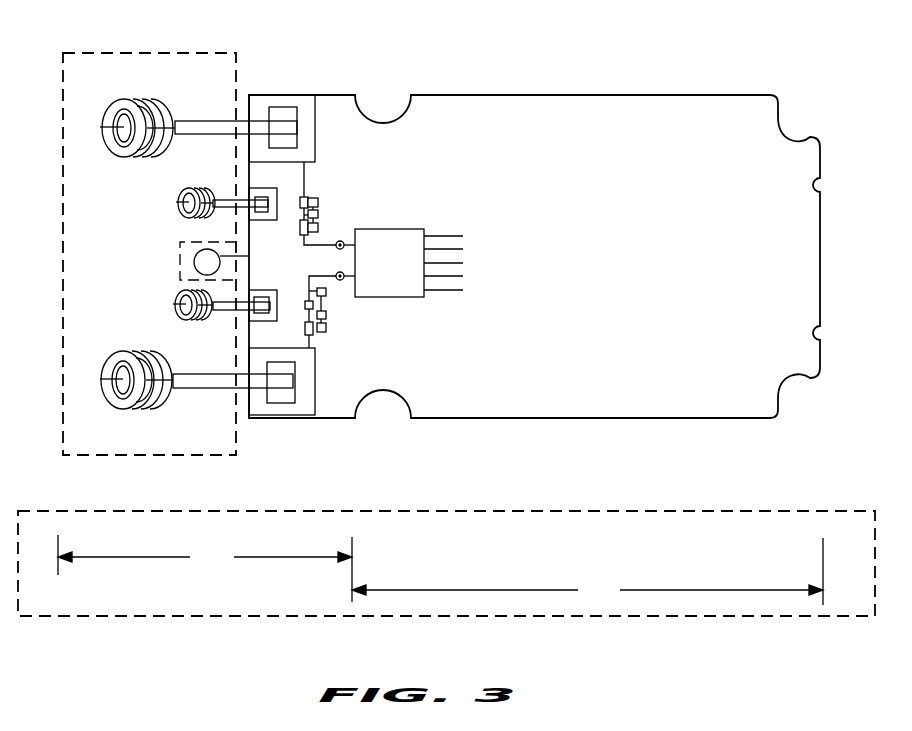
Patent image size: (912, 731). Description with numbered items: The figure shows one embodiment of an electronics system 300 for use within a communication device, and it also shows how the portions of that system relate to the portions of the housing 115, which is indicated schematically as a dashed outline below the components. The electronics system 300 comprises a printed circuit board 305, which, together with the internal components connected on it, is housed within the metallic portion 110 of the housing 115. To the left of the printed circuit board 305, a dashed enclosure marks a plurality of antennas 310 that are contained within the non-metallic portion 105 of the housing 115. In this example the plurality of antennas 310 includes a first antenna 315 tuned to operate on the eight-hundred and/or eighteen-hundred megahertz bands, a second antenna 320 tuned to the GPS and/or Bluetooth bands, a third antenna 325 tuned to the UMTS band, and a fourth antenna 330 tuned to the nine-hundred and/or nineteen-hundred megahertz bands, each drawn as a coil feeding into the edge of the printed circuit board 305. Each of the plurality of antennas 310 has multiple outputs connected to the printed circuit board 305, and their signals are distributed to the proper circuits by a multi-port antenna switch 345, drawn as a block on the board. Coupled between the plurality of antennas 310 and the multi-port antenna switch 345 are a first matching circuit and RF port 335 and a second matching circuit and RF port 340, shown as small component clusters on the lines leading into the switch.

The electronics system 300 is at (203, 652).
The printed circuit board 305 is at (665, 403).
The plurality of antennas 310 is at (63, 53).
The first antenna 315 is at (140, 106).
The second antenna 320 is at (184, 190).
The third antenna 325 is at (182, 290).
The fourth antenna 330 is at (147, 352).
The first matching circuit and RF port 335 is at (322, 213).
The second matching circuit and RF port 340 is at (328, 322).
The multi-port antenna switch 345 is at (413, 232).
The non-metallic portion 105 is at (205, 568).
The metallic portion 110 is at (587, 571).
The housing 115 is at (807, 618).